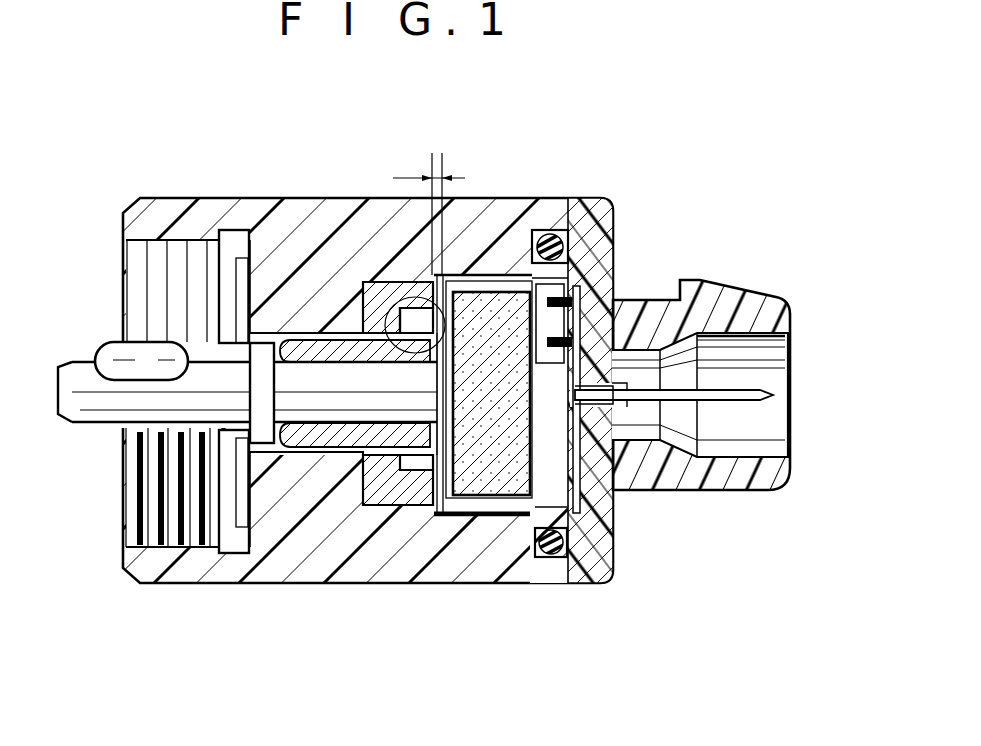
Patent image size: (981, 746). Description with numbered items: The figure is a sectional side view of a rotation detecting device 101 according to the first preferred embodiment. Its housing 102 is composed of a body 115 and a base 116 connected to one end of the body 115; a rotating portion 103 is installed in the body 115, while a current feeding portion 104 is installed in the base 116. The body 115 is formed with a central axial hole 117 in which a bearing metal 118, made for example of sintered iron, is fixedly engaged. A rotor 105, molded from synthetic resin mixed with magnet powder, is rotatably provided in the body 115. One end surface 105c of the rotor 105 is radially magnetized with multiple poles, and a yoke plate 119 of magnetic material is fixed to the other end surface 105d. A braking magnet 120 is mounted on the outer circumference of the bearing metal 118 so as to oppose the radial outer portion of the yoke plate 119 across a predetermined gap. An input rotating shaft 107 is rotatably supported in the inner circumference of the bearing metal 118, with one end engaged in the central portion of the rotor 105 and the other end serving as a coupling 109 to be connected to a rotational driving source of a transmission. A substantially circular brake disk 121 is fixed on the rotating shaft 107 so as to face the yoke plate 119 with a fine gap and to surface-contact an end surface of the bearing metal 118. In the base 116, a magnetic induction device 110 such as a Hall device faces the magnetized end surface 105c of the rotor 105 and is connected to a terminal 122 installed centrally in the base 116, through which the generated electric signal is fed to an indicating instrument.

The rotation detecting device 101 is at (551, 598).
The housing 102 is at (331, 583).
The rotating portion 103 is at (492, 300).
The current feeding portion 104 is at (590, 318).
The rotor 105 is at (488, 500).
The one end surface 105c is at (496, 288).
The other end surface 105d is at (445, 285).
The input rotating shaft 107 is at (246, 556).
The coupling 109 is at (108, 343).
The magnetic induction device 110 is at (565, 266).
The body 115 is at (195, 583).
The base 116 is at (590, 588).
The central axial hole 117 is at (300, 345).
The bearing metal 118 is at (337, 326).
The yoke plate 119 is at (452, 517).
The braking magnet 120 is at (377, 512).
The brake disk 121 is at (432, 520).
The terminal 122 is at (770, 393).